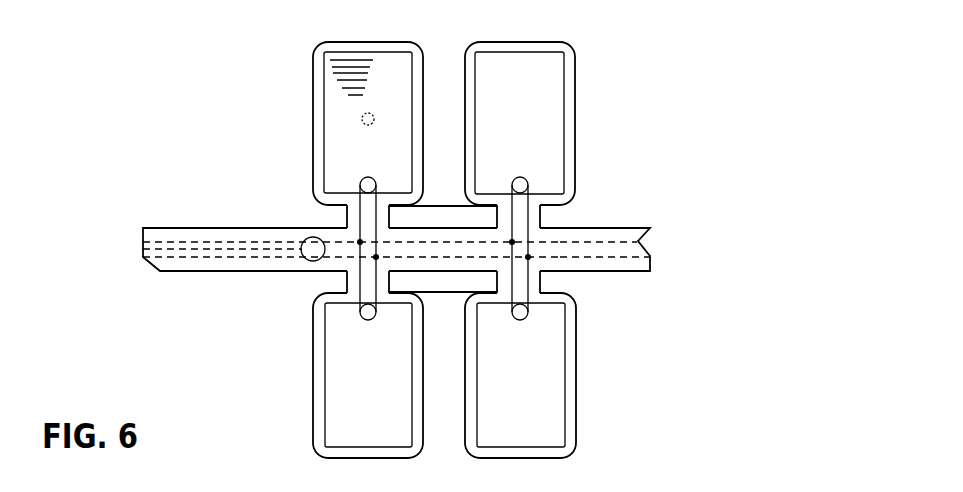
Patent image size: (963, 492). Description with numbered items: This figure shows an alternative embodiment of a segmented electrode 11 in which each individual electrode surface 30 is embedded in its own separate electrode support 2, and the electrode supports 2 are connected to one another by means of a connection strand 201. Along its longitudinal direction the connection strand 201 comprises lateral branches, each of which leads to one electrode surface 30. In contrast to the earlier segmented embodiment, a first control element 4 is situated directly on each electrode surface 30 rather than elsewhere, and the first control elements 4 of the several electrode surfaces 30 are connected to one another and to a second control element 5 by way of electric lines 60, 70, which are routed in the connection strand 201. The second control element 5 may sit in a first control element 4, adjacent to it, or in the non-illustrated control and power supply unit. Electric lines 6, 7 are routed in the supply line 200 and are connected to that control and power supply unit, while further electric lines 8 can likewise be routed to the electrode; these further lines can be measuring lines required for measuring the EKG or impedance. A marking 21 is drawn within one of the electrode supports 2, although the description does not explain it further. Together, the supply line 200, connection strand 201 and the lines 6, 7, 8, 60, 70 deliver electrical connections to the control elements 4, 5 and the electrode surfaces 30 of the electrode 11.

The segmented electrode 11 is at (754, 69).
The electrode surface 30 is at (545, 73).
The electrode support 2 is at (568, 140).
The first control element 4 is at (525, 183).
The electric line 70 is at (637, 241).
The electric line 60 is at (652, 257).
The connection strand 201 is at (625, 265).
The supply line 200 is at (235, 273).
The marking 21 is at (362, 117).
The second control element 5 is at (310, 242).
The electric line 7 is at (143, 242).
The electric line 8 is at (143, 249).
The electric line 6 is at (143, 257).